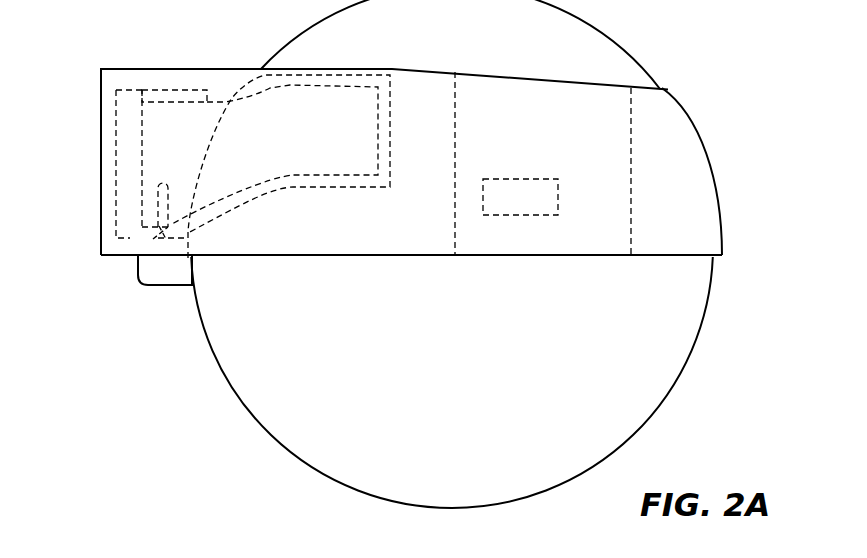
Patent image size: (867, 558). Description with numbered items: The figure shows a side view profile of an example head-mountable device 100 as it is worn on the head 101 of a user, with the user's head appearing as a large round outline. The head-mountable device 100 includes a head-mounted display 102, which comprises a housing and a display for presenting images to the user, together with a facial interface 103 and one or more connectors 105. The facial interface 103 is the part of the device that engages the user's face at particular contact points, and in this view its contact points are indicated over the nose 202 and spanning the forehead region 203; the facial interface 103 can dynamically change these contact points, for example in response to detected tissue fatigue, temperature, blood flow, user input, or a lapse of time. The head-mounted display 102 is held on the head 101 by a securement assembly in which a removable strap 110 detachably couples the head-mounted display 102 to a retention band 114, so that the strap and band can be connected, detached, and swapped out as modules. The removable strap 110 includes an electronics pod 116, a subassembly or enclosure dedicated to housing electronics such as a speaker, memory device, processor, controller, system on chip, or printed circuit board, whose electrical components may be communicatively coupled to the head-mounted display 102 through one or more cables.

The head-mountable device 100 is at (62, 84).
The head 101 is at (293, 427).
The head-mounted display 102 is at (133, 175).
The facial interface 103 is at (230, 90).
The connector 105 is at (172, 95).
The removable strap 110 is at (527, 105).
The retention band 114 is at (668, 170).
The electronics pod 116 is at (517, 216).
The nose 202 is at (162, 268).
The forehead region 203 is at (287, 58).